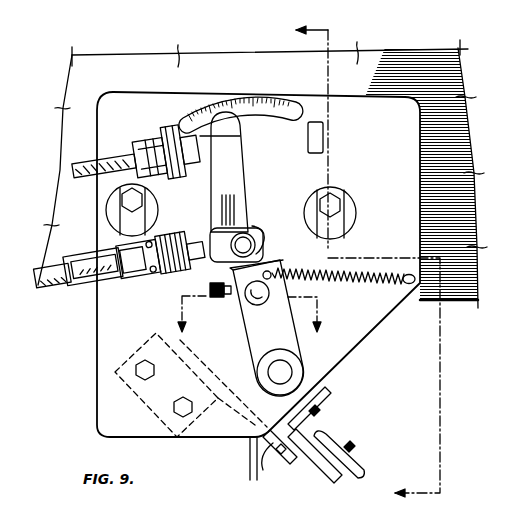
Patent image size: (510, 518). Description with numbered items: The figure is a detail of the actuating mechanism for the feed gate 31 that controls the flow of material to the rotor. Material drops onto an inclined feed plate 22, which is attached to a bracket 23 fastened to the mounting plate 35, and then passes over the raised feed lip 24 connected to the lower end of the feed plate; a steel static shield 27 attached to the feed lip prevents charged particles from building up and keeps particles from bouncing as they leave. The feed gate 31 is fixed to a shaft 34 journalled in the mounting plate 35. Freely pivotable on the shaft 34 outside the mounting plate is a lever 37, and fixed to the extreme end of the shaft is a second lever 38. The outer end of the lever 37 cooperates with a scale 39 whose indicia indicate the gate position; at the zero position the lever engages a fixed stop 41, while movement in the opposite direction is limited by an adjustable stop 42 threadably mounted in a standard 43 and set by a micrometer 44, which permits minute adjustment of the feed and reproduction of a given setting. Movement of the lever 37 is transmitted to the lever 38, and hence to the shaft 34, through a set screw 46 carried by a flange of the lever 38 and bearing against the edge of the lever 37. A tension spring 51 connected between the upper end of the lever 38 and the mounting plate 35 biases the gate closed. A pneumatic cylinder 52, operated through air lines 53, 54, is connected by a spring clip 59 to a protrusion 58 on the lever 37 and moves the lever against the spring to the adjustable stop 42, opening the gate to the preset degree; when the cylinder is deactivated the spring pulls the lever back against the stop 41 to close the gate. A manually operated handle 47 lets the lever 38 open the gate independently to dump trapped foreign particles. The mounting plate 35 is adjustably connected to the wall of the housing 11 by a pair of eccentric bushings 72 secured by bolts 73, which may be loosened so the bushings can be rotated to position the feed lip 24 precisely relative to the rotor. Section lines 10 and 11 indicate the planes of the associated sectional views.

The section line 10- 10 is at (351, 260).
The housing 11 is at (253, 314).
The feed plate 22 is at (279, 462).
The bracket 23 is at (147, 405).
The feed lip 24 is at (312, 464).
The static shield 27 is at (337, 446).
The feed gate 31 is at (328, 392).
The shaft 34 is at (289, 362).
The mounting plate 35 is at (345, 97).
The lever 37 is at (247, 178).
The second lever 38 is at (246, 348).
The scale 39 is at (235, 99).
The stop 41 is at (309, 139).
The adjustable stop 42 is at (242, 138).
The standard 43 is at (152, 131).
The micrometer 44 is at (182, 166).
The set screw 46 is at (216, 299).
The manually operated handle 47 is at (259, 306).
The tension spring 51 is at (361, 285).
The pneumatic cylinder 52 is at (128, 287).
The air line 53 is at (50, 290).
The air line 54 is at (85, 290).
The protrusion 58 is at (264, 242).
The spring clip 59 is at (259, 231).
The eccentric bushing 72 is at (158, 212).
The bolt 73 is at (343, 186).